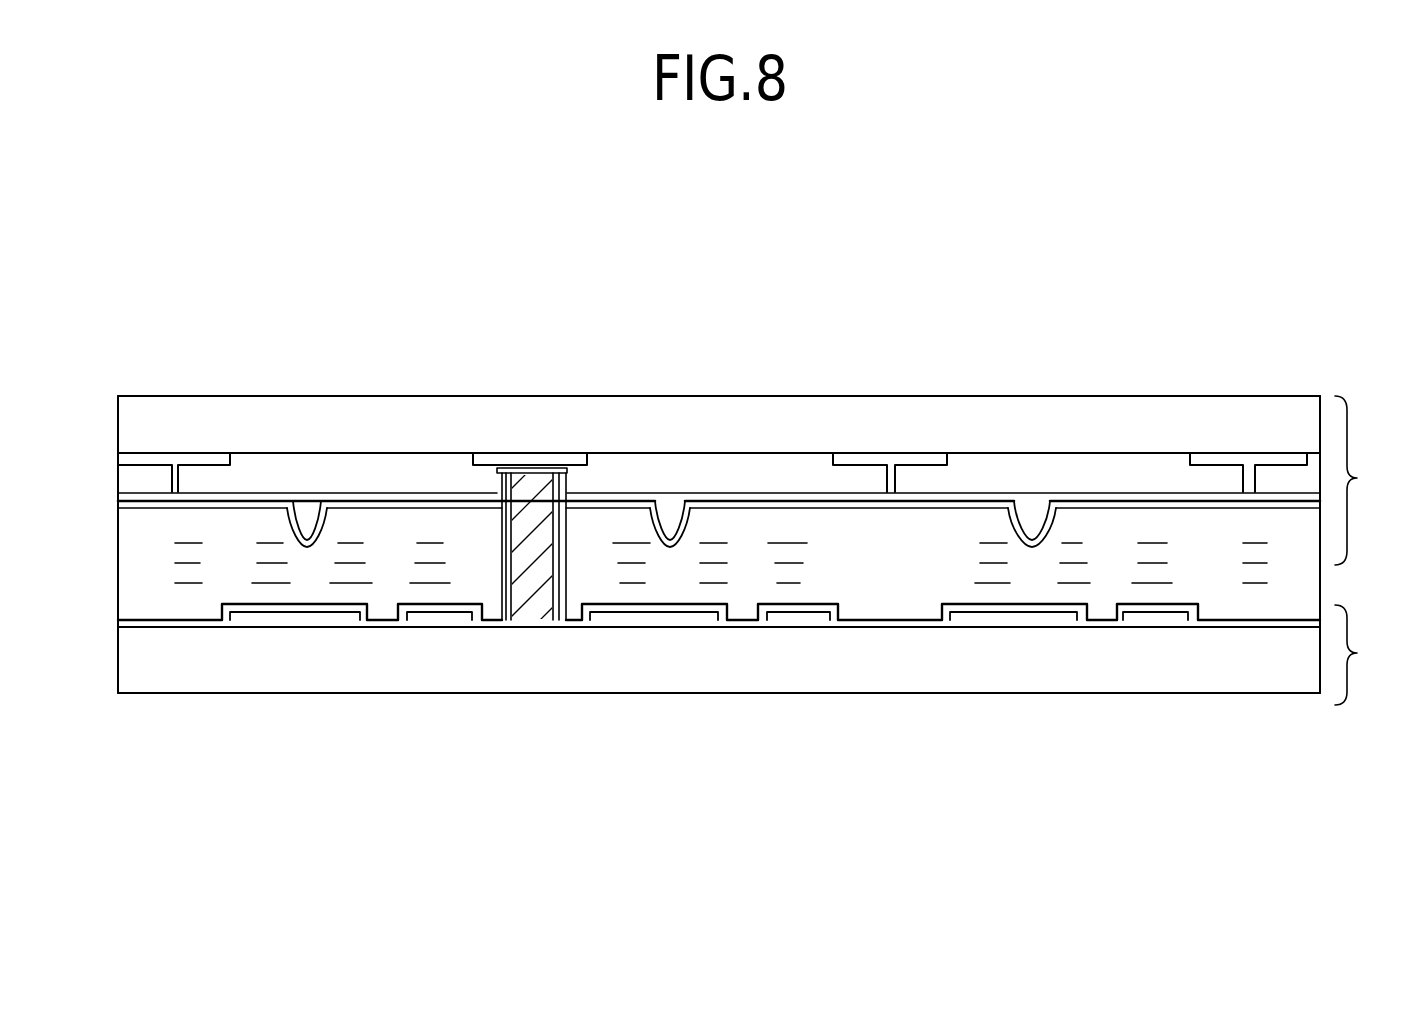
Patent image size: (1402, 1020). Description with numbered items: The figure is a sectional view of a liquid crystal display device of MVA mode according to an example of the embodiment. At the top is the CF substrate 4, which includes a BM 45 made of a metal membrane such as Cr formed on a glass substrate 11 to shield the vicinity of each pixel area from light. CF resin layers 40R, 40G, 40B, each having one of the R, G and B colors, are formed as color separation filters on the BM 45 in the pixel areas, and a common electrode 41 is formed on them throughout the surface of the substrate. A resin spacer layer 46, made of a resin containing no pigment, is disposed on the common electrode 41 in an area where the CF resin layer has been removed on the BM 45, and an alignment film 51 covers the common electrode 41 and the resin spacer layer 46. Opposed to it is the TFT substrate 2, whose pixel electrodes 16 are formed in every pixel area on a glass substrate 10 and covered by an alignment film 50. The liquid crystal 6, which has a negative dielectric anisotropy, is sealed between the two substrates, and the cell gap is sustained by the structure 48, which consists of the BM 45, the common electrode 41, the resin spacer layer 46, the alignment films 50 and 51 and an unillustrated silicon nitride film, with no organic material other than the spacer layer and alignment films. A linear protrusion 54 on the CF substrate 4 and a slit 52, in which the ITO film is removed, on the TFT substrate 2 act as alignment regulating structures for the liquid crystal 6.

The TFT substrate 2 is at (1361, 655).
The CF substrate 4 is at (1361, 480).
The liquid crystal 6 is at (1283, 585).
The glass substrate 10 is at (990, 668).
The glass substrate 11 is at (857, 425).
The pixel electrode 16 is at (1023, 618).
The CF resin layer 40R is at (282, 472).
The CF resin layer 40G is at (990, 468).
The CF resin layer 40B is at (778, 470).
The common electrode 41 is at (1100, 468).
The BM 45 is at (1233, 457).
The resin spacer layer 46 is at (548, 532).
The structure 48 is at (532, 655).
The alignment film 50 is at (152, 617).
The alignment film 51 is at (153, 512).
The slit 52 is at (742, 607).
The linear protrusion 54 is at (313, 510).